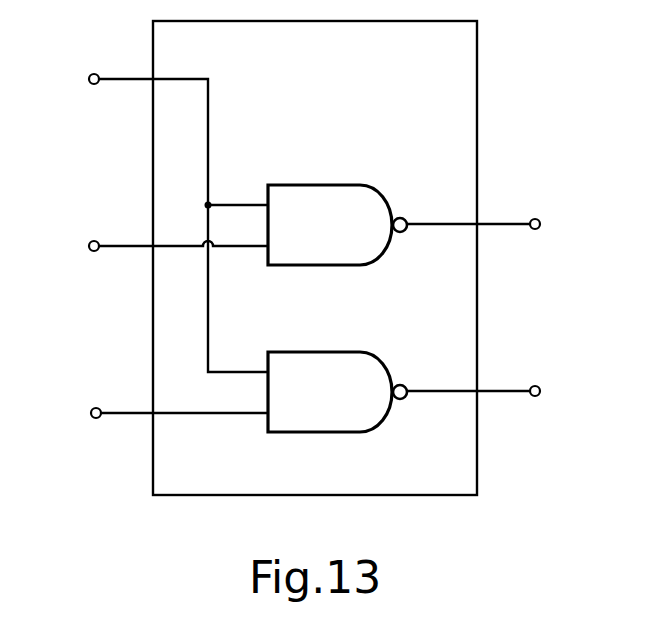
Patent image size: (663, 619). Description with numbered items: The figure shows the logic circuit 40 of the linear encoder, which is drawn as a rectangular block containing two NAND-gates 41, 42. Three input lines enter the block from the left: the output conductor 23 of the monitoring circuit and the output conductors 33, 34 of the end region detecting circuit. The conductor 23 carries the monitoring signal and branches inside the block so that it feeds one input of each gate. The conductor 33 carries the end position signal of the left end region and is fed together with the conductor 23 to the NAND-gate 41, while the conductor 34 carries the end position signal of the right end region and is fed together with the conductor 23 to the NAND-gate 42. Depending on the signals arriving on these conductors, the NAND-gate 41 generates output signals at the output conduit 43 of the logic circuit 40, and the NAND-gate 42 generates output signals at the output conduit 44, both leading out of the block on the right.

The output conductor of the monitoring circuit 23 is at (137, 77).
The output conductor of the end region detecting circuit 33 is at (128, 244).
The output conductor of the end region detecting circuit 34 is at (122, 411).
The logic circuit 40 is at (466, 474).
The NAND-gate 41 is at (300, 185).
The NAND-gate 42 is at (305, 352).
The output conduit 43 is at (497, 220).
The output conduit 44 is at (500, 388).